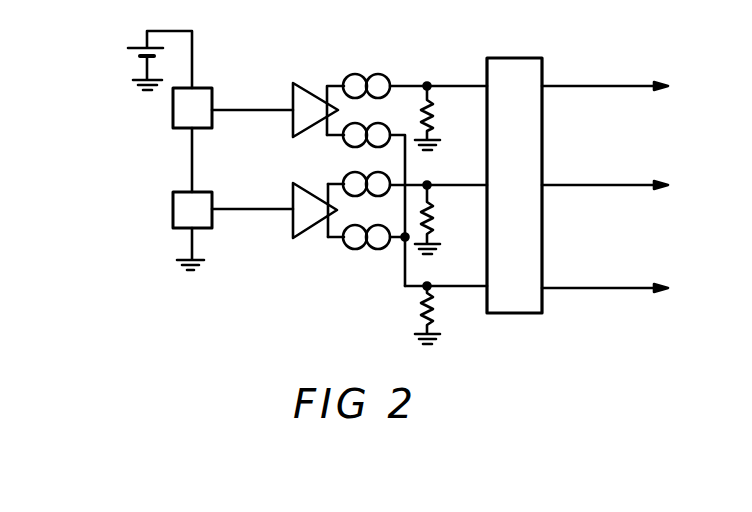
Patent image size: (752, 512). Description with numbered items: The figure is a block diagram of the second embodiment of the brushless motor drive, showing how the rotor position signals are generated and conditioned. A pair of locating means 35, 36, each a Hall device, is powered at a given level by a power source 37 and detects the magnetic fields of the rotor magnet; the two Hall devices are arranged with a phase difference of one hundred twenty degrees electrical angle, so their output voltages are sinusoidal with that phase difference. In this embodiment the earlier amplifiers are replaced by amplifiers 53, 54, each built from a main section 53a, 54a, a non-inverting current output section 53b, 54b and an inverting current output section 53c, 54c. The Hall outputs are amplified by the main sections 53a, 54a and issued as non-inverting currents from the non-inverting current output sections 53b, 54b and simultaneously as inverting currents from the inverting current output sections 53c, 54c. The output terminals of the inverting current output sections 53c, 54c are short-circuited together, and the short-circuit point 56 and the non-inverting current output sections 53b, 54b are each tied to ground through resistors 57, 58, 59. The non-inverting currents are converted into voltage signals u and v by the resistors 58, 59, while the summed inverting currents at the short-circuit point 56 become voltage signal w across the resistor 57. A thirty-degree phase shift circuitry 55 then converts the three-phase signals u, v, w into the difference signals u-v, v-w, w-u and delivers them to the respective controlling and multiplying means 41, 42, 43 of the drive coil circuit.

The power source 37 is at (130, 48).
The locating means (Hall device) 35 is at (172, 111).
The locating means (Hall device) 36 is at (173, 208).
The amplifier 53 is at (293, 80).
The main section 53a is at (321, 84).
The non-inverting current output section 53b is at (423, 57).
The inverting current output section 53c is at (343, 140).
The amplifier 54 is at (280, 223).
The main section 54a is at (320, 228).
The non-inverting current output section 54b is at (343, 180).
The inverting current output section 54c is at (357, 250).
The 30° phase shift circuitry 55 is at (510, 57).
The short-circuit point 56 is at (403, 241).
The resistor 57 is at (442, 315).
The resistor 58 is at (442, 219).
The resistor 59 is at (442, 118).
The controlling and multiplying means 41 is at (626, 75).
The controlling and multiplying means 42 is at (626, 173).
The controlling and multiplying means 43 is at (626, 276).